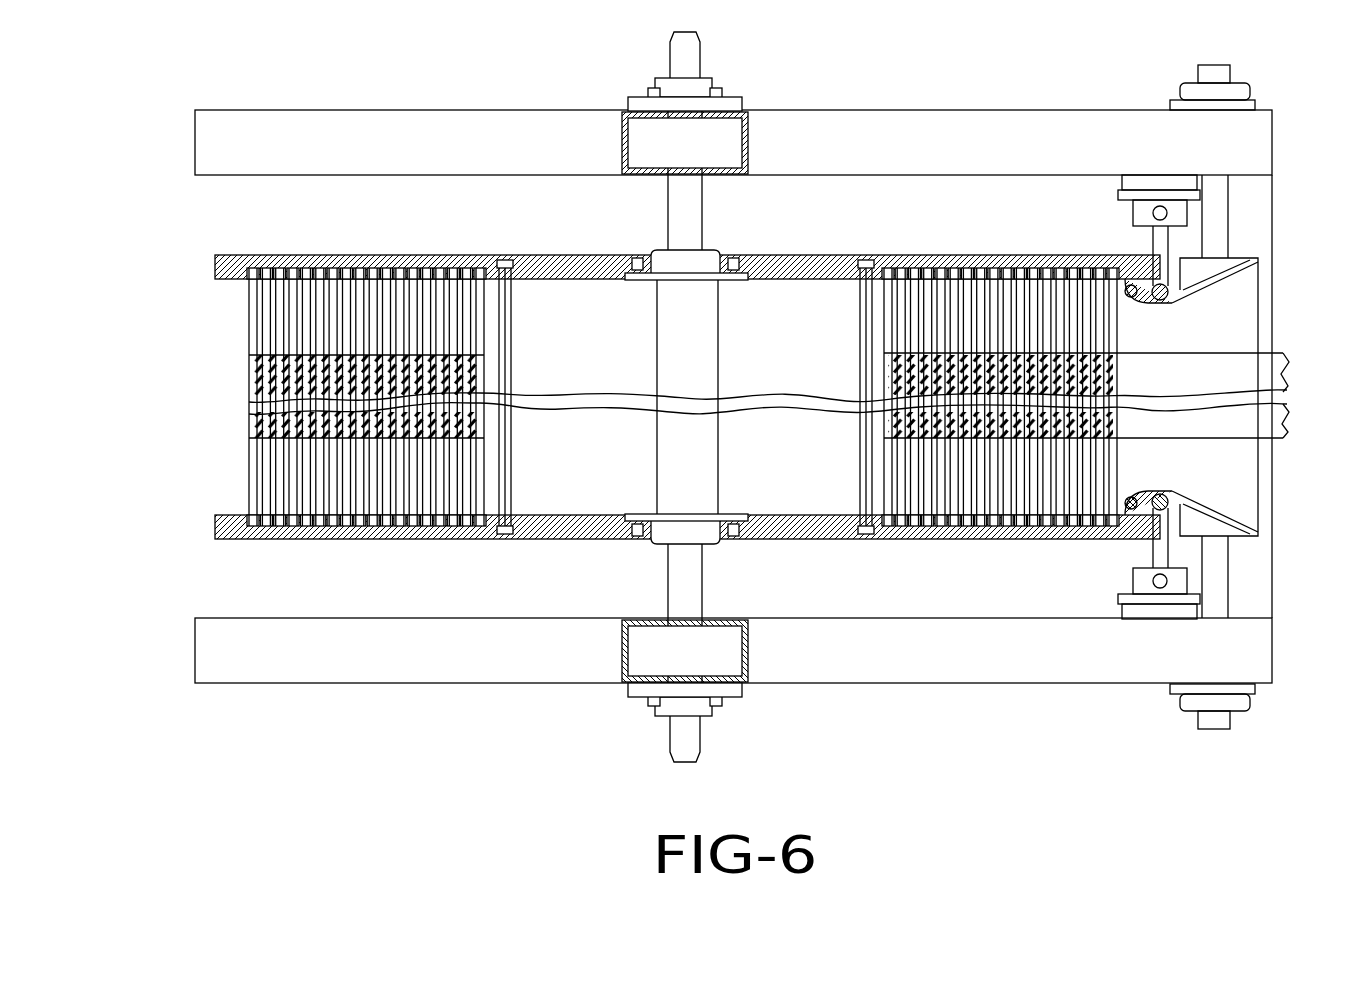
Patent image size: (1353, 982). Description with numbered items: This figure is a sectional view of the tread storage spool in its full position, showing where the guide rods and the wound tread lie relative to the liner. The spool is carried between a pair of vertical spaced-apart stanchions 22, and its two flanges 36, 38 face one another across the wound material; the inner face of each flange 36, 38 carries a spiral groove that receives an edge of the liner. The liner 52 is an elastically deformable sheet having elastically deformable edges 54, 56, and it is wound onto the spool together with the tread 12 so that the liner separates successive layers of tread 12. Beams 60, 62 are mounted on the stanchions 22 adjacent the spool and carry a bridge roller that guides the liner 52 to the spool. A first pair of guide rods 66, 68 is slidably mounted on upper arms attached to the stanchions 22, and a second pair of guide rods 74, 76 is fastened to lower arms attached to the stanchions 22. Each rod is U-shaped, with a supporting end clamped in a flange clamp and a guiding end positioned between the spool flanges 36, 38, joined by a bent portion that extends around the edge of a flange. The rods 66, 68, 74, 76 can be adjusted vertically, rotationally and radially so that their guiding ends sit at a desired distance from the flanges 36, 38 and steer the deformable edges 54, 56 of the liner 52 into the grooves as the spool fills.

The tread 12 is at (1272, 417).
The stanchions 22 is at (624, 144).
The flange 36 is at (262, 258).
The flange 38 is at (262, 541).
The liner 52 is at (1238, 332).
The elastically deformable edge 54 is at (896, 268).
The elastically deformable edge 56 is at (933, 540).
The beam 60 is at (1137, 660).
The beam 62 is at (901, 133).
The guide rod 66 is at (1133, 290).
The guide rod 68 is at (1130, 503).
The guide rod 74 is at (1162, 296).
The guide rod 76 is at (1166, 500).